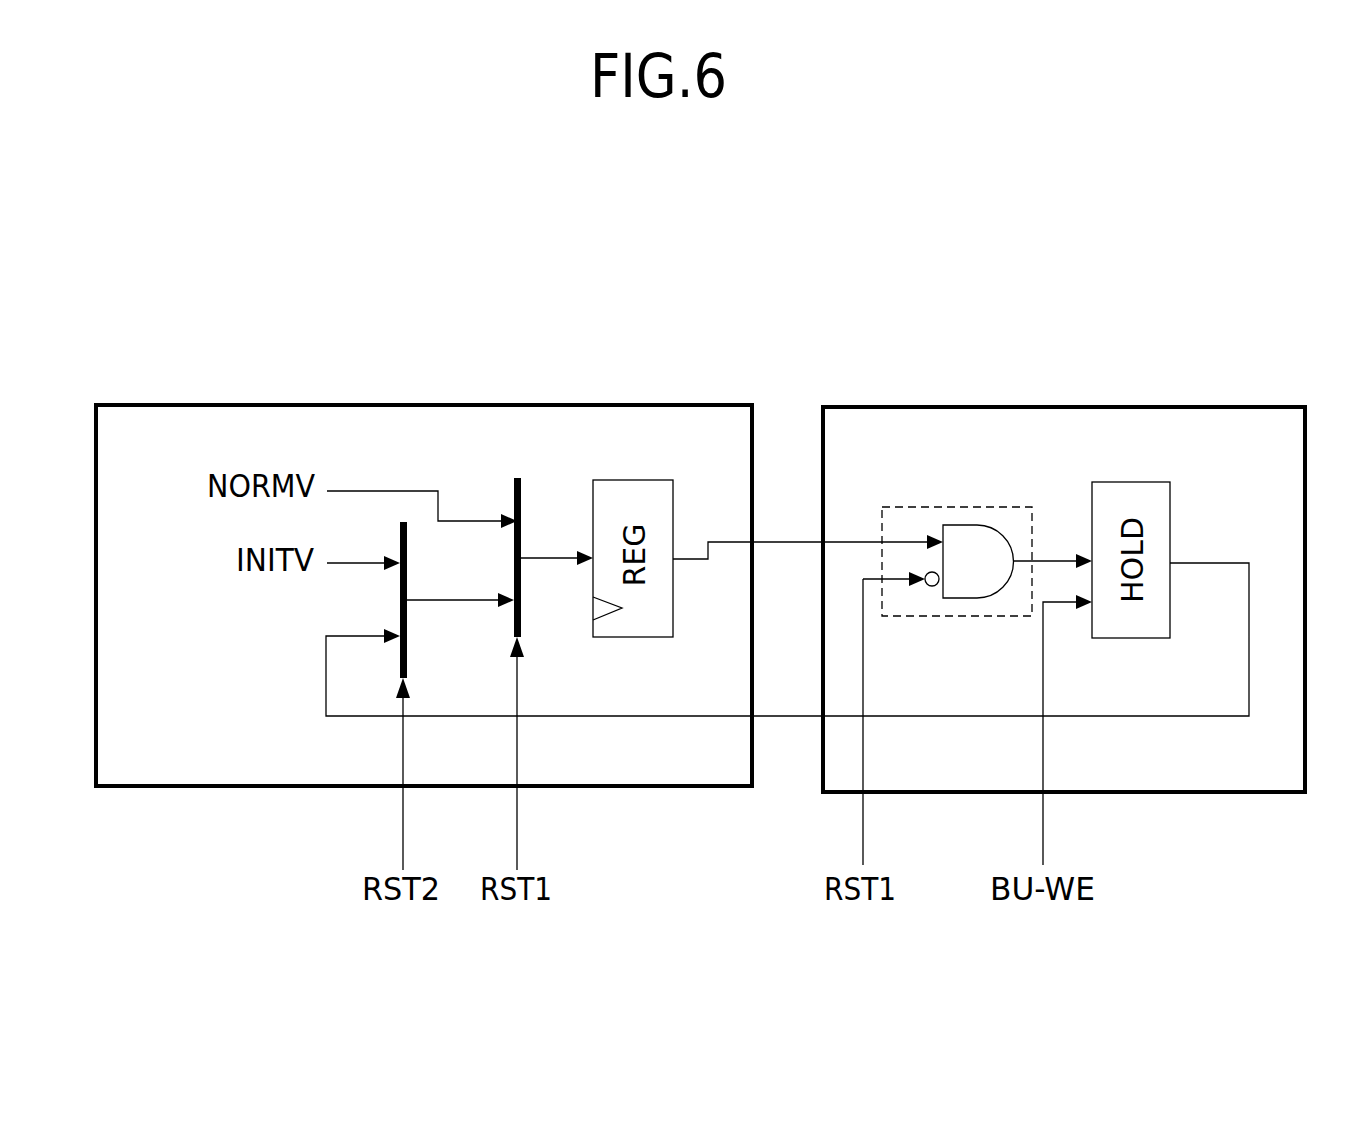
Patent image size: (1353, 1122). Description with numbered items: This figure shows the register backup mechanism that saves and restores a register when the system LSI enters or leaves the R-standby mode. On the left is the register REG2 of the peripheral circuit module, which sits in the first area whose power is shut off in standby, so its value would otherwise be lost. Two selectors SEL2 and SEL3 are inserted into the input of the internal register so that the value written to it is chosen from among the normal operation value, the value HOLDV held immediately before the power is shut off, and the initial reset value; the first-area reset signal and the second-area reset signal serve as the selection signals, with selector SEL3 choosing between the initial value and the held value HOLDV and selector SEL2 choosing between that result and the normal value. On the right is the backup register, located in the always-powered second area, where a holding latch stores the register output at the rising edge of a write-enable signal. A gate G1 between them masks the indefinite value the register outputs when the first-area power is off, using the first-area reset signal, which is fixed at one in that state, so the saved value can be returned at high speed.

The register REG2 is at (403, 405).
The selector SEL3 is at (403, 522).
The selector SEL2 is at (512, 480).
The gate G1 is at (983, 507).
The value immediately before the power is shut off HOLDV is at (326, 668).